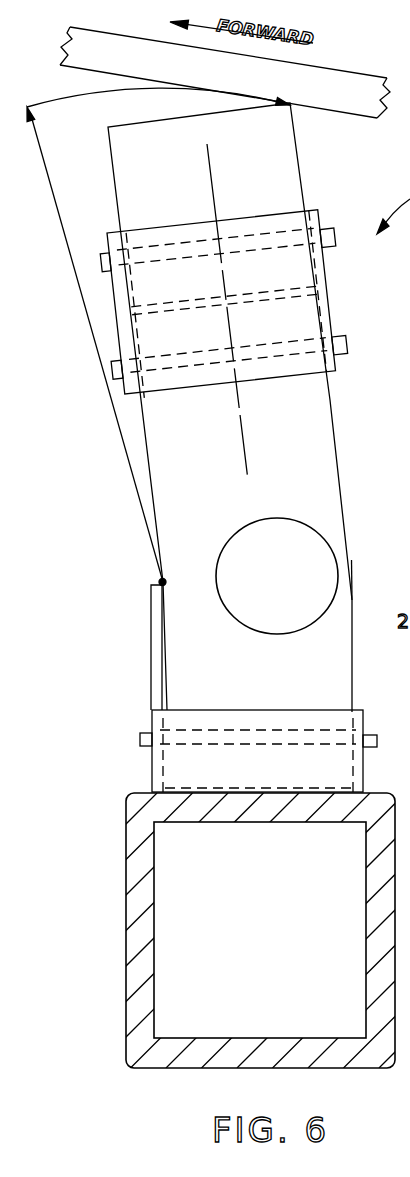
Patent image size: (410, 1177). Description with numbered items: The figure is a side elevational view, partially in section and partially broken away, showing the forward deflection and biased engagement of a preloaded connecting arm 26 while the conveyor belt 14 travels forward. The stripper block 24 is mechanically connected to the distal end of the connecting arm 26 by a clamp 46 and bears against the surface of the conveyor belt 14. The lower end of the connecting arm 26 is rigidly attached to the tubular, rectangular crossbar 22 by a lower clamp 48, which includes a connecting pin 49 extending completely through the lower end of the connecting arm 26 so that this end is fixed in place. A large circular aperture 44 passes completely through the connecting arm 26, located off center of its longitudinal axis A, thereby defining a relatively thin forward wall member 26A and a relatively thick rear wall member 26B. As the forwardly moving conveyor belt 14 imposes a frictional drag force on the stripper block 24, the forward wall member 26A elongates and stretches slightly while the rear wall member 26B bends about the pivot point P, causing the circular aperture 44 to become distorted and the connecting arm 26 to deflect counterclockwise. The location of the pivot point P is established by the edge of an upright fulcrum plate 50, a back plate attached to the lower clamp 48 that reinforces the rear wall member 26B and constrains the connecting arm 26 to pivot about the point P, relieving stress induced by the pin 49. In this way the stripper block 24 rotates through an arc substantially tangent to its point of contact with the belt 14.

The conveyor belt 14 is at (350, 84).
The crossbar 22 is at (133, 822).
The stripper block 24 is at (303, 170).
The connecting arm 26 is at (338, 442).
The forward segment or wall member 26A is at (345, 573).
The rear segment or wall member 26B is at (180, 598).
The aperture 44 is at (322, 551).
The clamp 46 is at (334, 304).
The clamp 48 is at (152, 722).
The connecting pin 49 is at (347, 345).
The fulcrum plate 50 is at (157, 661).
The longitudinal axis A is at (212, 184).
The pivot point P is at (159, 579).